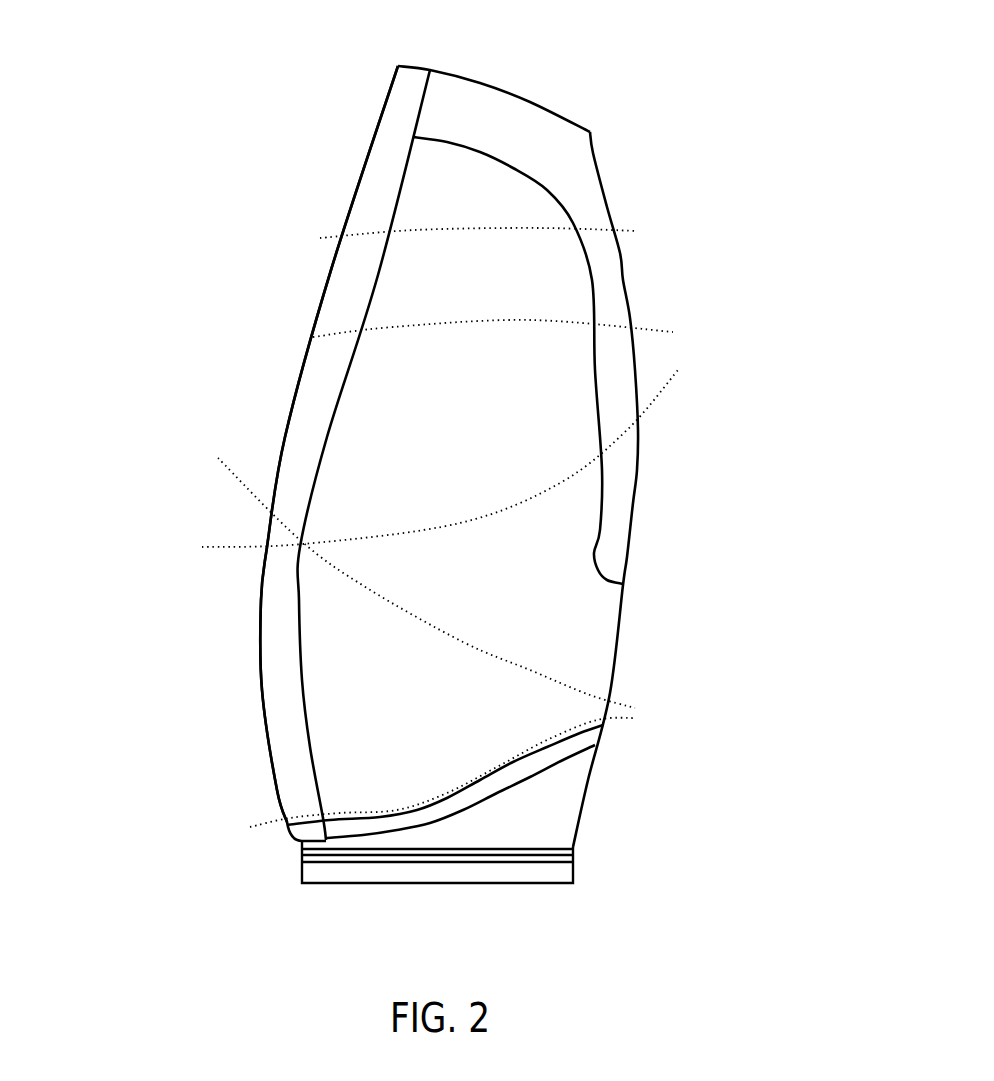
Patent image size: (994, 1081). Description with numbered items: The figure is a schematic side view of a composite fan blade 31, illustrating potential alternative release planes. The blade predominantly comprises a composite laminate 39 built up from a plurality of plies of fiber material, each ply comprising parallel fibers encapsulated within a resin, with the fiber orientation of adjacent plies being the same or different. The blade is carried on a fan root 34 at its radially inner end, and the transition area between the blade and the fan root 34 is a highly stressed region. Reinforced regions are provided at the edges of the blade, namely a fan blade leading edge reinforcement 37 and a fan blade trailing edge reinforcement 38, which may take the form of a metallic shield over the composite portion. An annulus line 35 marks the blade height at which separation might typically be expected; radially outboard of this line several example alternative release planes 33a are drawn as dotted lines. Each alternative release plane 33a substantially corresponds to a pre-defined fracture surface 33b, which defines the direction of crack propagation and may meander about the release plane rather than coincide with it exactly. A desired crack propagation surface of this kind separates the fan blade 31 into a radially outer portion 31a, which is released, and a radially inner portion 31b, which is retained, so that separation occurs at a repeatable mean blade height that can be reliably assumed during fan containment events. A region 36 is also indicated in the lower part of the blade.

The composite fan blade 31 is at (626, 104).
The radially outer portion 31a is at (438, 200).
The radially inner portion 31b is at (540, 255).
The alternative release plane 33a is at (415, 231).
The pre-defined fracture surface 33b is at (282, 548).
The fan root 34 is at (555, 870).
The annulus line 35 is at (338, 813).
The lower region 36 is at (520, 826).
The fan blade leading edge reinforcement 37 is at (295, 440).
The fan blade trailing edge reinforcement 38 is at (608, 267).
The composite laminate 39 is at (330, 749).